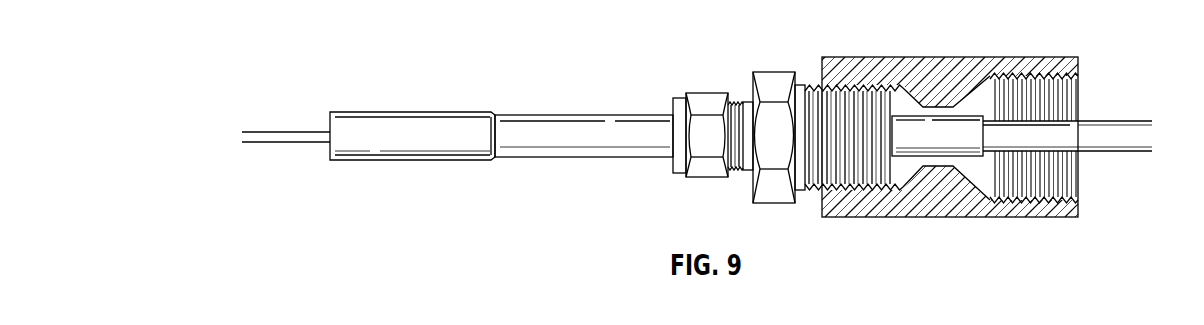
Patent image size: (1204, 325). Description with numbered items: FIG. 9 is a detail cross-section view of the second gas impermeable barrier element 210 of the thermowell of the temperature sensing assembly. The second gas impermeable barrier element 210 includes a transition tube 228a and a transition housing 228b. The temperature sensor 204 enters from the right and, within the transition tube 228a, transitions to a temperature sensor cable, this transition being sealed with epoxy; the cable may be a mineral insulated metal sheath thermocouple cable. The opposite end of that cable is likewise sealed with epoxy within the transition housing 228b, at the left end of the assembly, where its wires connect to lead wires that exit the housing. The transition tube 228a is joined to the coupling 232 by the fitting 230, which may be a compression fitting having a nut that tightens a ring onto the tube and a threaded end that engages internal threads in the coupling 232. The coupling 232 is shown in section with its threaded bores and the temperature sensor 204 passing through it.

The second gas impermeable barrier element 210 is at (476, 36).
The transition housing 228b is at (402, 112).
The transition tube 228a is at (597, 114).
The fitting 230 is at (772, 72).
The coupling 232 is at (952, 57).
The temperature sensor 204 is at (1123, 120).